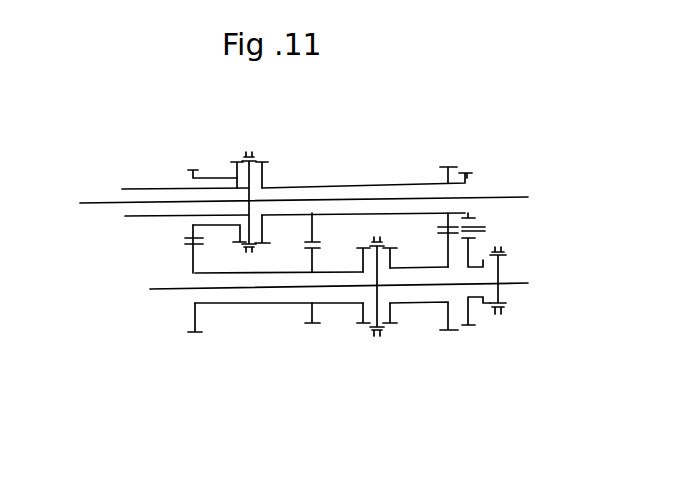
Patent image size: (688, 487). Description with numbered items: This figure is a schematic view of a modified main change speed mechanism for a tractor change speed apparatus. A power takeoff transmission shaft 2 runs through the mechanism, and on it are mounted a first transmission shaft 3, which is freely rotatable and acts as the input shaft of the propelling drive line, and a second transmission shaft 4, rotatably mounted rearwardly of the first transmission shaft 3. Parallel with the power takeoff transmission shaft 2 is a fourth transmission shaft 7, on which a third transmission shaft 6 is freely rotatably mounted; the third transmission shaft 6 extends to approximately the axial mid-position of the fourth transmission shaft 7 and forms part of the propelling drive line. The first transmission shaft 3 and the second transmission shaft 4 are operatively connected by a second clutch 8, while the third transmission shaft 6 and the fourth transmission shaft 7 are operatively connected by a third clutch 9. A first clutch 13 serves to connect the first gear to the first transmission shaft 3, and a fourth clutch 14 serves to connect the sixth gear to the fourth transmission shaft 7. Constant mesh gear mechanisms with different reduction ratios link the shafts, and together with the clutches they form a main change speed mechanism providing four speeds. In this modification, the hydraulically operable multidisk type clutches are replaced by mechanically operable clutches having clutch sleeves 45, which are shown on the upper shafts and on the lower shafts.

The power takeoff transmission shaft 2 is at (90, 203).
The first transmission shaft 3 is at (148, 189).
The second transmission shaft 4 is at (367, 188).
The third transmission shaft 6 is at (237, 306).
The fourth transmission shaft 7 is at (165, 289).
The second clutch 8 is at (268, 158).
The third clutch 9 is at (357, 333).
The first clutch 13 is at (235, 156).
The fourth clutch 14 is at (388, 333).
The clutch sleeve 45 is at (249, 157).